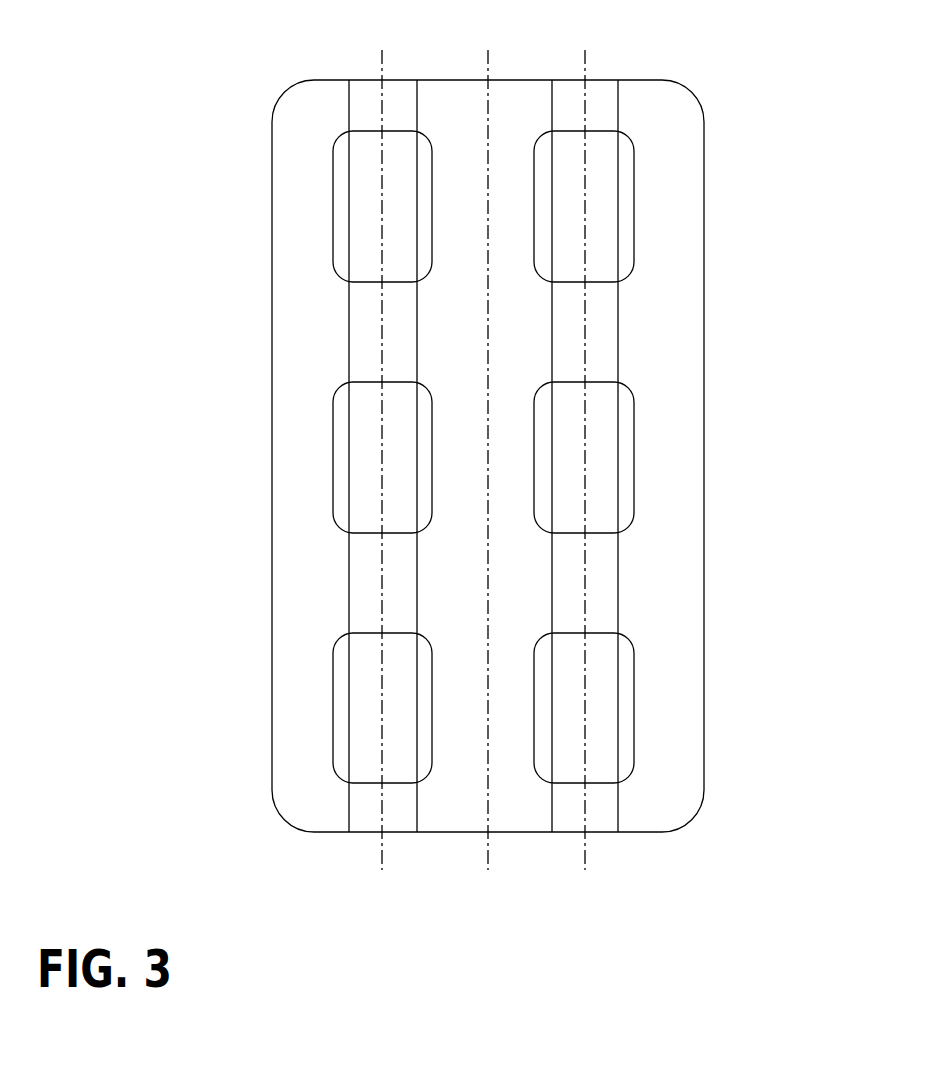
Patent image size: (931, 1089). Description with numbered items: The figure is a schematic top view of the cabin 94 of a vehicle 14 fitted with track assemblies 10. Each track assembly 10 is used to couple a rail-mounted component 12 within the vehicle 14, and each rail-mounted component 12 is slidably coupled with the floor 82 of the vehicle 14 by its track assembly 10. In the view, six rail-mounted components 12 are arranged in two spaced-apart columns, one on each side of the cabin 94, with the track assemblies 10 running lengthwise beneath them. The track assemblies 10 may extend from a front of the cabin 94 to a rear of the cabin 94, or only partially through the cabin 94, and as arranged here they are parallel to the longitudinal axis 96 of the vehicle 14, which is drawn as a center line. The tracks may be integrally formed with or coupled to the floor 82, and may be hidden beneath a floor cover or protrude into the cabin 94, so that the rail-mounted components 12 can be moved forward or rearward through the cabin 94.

The track assembly 10 is at (417, 312).
The rail-mounted component 12 is at (534, 185).
The vehicle 14 is at (479, 466).
The floor 82 is at (293, 690).
The cabin 94 is at (647, 120).
The longitudinal axis 96 is at (485, 853).